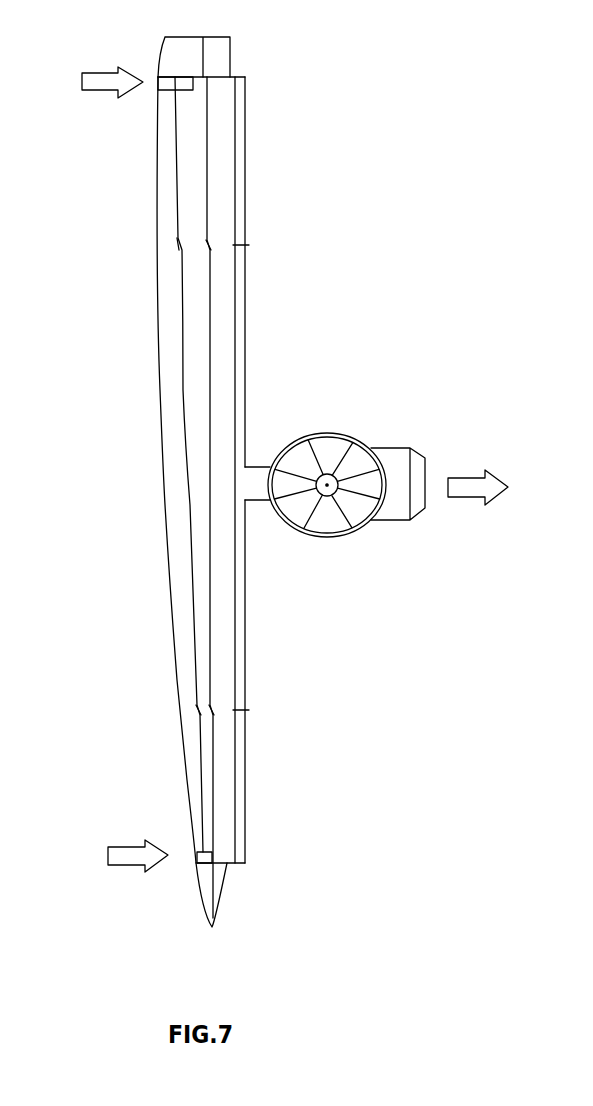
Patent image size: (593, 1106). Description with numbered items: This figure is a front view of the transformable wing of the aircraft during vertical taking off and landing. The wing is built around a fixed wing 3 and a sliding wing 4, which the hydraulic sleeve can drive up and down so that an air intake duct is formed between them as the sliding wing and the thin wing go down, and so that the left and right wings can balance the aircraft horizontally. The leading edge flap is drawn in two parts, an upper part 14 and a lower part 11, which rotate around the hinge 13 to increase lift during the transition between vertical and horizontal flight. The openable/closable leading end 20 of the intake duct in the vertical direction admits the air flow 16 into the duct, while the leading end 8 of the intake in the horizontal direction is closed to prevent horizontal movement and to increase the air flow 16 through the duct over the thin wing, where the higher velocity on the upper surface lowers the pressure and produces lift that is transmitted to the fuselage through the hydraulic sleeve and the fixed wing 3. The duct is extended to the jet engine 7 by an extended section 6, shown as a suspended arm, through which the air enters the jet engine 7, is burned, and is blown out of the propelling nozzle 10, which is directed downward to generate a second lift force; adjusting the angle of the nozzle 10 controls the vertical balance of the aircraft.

The fixed wing 3 is at (183, 578).
The sliding wing 4 is at (247, 158).
The extended section of the air intake duct 6 is at (260, 487).
The jet engine 7 is at (328, 437).
The openable/closable leading end of the air intake duct in horizontal direction 8 is at (327, 537).
The propelling nozzle 10 is at (399, 487).
The lower part of the leading edge flap 11 is at (222, 392).
The hinge 13 is at (207, 245).
The upper part of the leading edge flap 14 is at (202, 487).
The air flow 16 is at (102, 80).
The openable/closable leading end of the air intake duct in vertical direction 20 is at (158, 82).